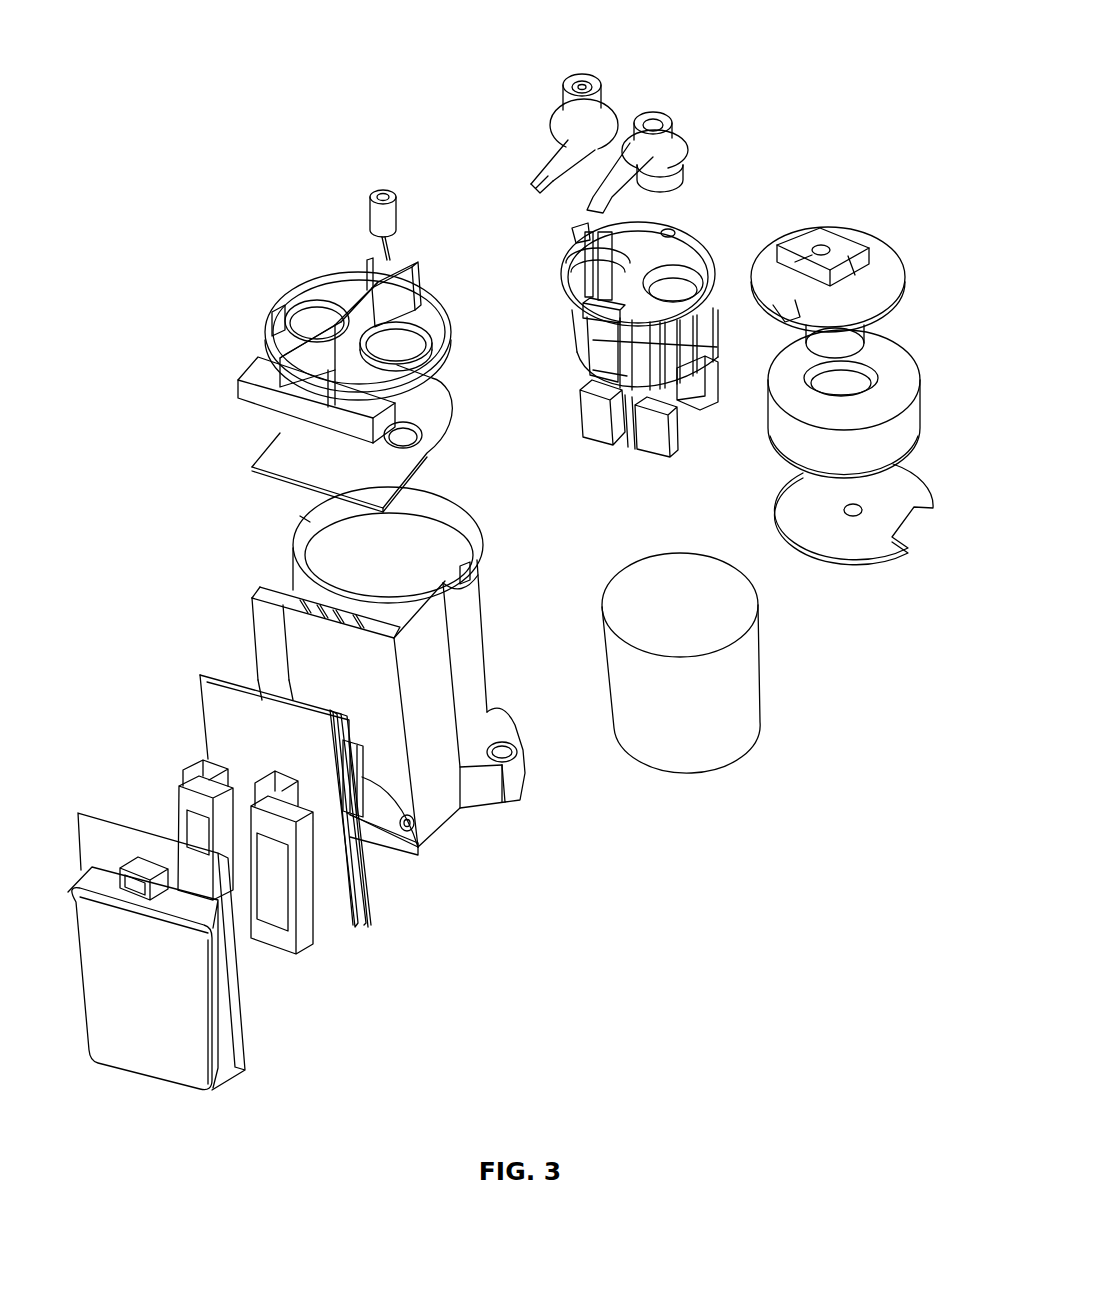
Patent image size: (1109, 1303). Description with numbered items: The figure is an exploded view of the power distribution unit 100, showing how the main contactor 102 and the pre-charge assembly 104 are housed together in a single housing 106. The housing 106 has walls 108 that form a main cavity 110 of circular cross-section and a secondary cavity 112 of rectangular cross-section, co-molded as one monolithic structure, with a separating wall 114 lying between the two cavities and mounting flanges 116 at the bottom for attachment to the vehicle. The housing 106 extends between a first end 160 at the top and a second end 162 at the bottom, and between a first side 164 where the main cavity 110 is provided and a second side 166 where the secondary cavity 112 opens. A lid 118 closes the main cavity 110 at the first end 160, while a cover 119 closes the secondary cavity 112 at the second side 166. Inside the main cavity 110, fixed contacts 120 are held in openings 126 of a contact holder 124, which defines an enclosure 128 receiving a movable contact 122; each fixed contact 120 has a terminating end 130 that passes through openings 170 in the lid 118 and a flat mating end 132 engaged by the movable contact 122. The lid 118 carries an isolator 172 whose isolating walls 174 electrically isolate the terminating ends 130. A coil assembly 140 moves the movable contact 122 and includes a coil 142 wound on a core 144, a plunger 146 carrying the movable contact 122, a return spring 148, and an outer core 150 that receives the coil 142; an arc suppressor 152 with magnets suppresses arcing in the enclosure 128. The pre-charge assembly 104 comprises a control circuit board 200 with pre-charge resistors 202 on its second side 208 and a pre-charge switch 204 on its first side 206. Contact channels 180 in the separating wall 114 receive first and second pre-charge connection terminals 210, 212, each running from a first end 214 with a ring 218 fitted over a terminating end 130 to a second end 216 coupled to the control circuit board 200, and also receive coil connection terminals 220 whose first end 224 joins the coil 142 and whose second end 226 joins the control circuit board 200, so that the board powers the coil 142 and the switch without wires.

The power distribution unit 100 is at (192, 252).
The main contactor 102 is at (768, 182).
The pre-charge assembly 104 is at (311, 1006).
The housing 106 is at (445, 743).
The walls 108 is at (462, 552).
The main cavity 110 is at (425, 548).
The secondary cavity 112 is at (392, 832).
The separating wall 114 is at (290, 632).
The mounting flanges 116 is at (520, 770).
The lid 118 is at (238, 459).
The cover 119 is at (141, 1053).
The fixed contacts 120 is at (583, 77).
The movable contact 122 is at (800, 225).
The contact holder 124 is at (683, 240).
The openings 126 is at (673, 282).
The enclosure 128 is at (603, 352).
The terminating end 130 is at (683, 130).
The mating end 132 is at (675, 183).
The coil assembly 140 is at (901, 340).
The coil 142 is at (920, 405).
The core 144 is at (890, 372).
The plunger 146 is at (840, 240).
The spring 148 is at (880, 262).
The outer core 150 is at (760, 683).
The arc suppressor 152 is at (633, 462).
The first end 160 is at (305, 515).
The second end 162 is at (440, 832).
The first side 164 is at (420, 455).
The second side 166 is at (330, 625).
The openings 170 is at (410, 437).
The isolator 172 is at (287, 300).
The isolating walls 174 is at (342, 278).
The contact channels 180 is at (286, 591).
The control circuit board 200 is at (350, 932).
The pre-charge resistors 202 is at (185, 763).
The pre-charge switch 204 is at (420, 832).
The first side 206 is at (198, 670).
The second side 208 is at (212, 689).
The first pre-charge connection terminal 210 is at (543, 160).
The second pre-charge connection terminal 212 is at (587, 198).
The first end 214 is at (610, 107).
The second end 216 is at (533, 185).
The ring 218 is at (549, 113).
The coil connection terminals 220 is at (578, 230).
The first end 224 is at (582, 297).
The second end 226 is at (587, 240).